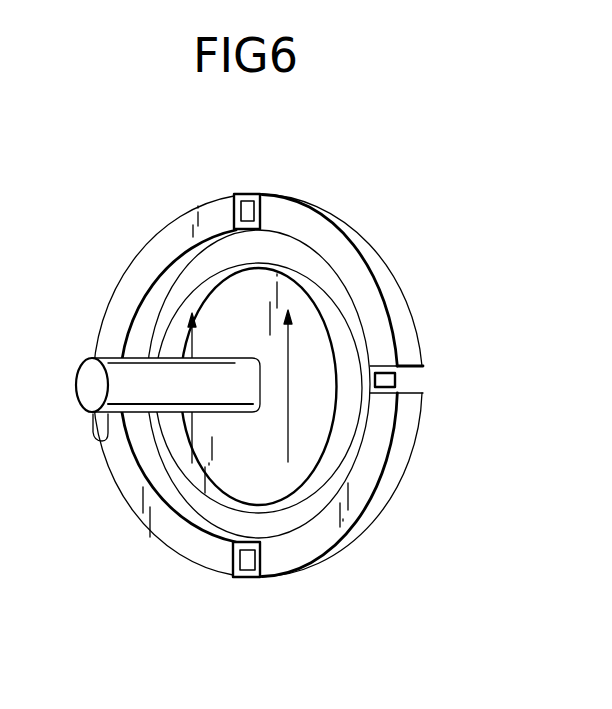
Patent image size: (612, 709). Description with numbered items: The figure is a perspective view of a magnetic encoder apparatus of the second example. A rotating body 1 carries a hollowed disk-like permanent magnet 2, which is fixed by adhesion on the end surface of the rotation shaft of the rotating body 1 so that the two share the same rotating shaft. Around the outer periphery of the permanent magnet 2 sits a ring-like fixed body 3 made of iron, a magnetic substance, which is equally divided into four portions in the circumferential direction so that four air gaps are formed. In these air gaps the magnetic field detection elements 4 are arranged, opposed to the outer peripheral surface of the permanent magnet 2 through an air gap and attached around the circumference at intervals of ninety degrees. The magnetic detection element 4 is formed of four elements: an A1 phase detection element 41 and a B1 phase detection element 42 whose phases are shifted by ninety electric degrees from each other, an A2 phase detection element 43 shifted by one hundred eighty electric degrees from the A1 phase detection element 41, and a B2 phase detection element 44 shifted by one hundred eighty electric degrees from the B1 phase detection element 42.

The rotating body 1 is at (82, 383).
The permanent magnet 2 is at (193, 292).
The ring-like fixed body 3 is at (392, 283).
The magnetic field detection element 4 is at (252, 202).
The A1 phase detection element 41 is at (243, 201).
The B1 phase detection element 42 is at (395, 380).
The A2 phase detection element 43 is at (247, 556).
The B2 phase detection element 44 is at (98, 438).